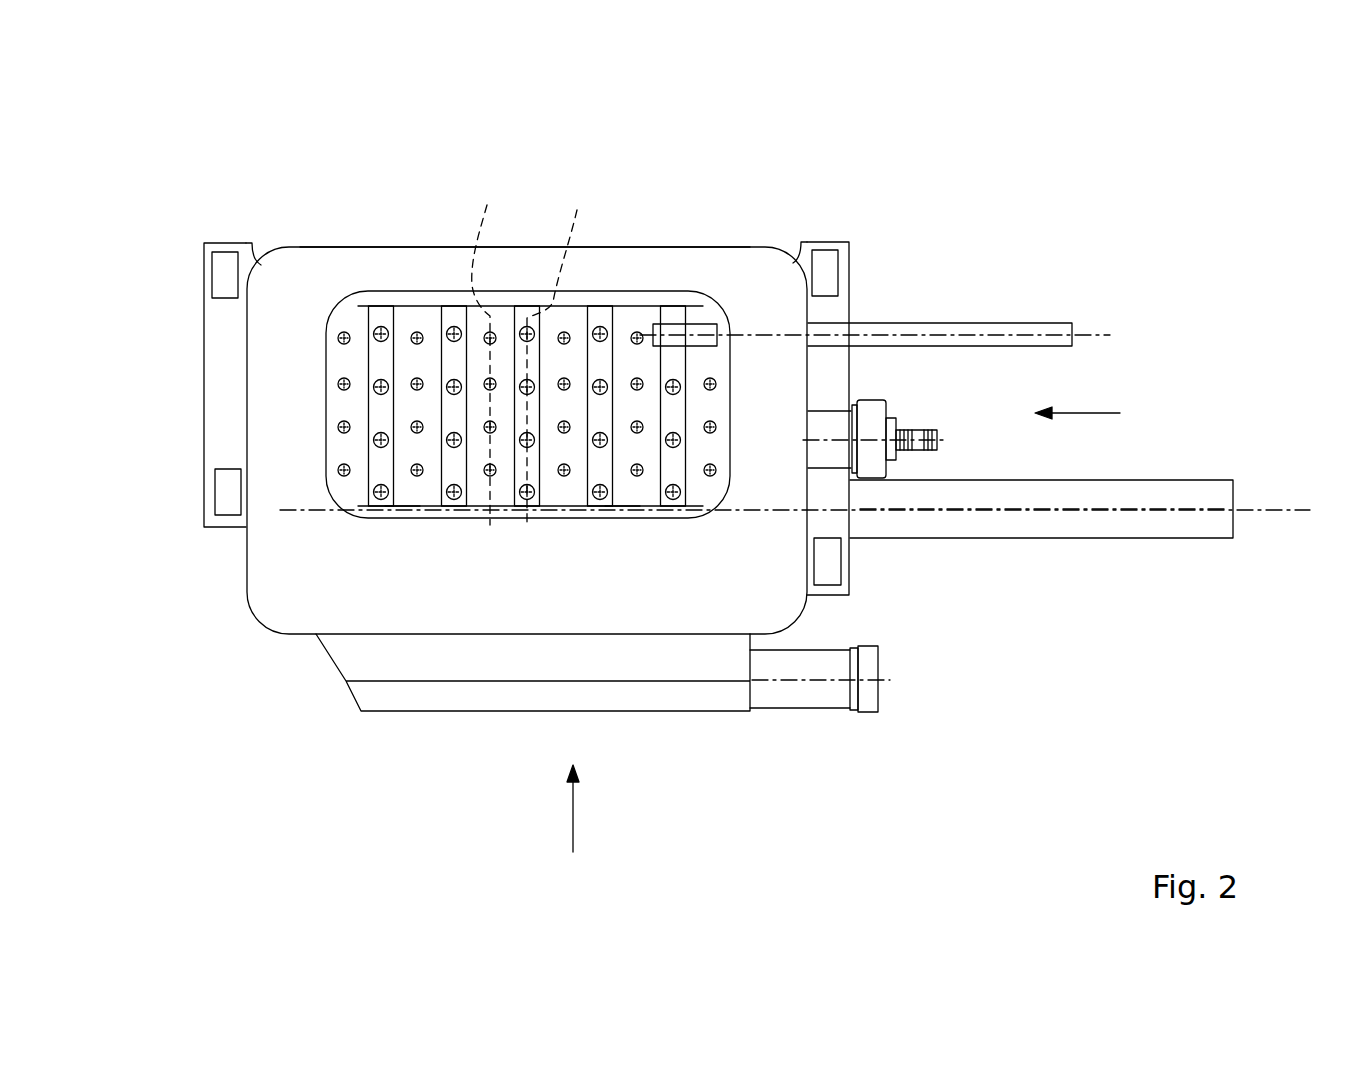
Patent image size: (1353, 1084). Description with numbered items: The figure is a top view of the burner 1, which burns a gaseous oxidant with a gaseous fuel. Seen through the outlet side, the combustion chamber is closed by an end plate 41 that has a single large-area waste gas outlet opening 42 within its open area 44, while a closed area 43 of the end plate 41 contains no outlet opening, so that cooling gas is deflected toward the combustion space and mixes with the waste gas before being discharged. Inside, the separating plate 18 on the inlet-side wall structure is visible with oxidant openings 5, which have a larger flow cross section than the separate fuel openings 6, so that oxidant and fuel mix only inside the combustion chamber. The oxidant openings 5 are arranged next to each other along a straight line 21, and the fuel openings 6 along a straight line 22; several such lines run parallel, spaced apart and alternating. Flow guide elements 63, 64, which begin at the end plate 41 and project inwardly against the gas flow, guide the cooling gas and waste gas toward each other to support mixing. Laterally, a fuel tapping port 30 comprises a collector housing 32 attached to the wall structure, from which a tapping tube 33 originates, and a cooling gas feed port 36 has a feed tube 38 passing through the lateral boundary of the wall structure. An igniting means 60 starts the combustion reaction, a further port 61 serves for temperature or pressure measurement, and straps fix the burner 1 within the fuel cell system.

The burner 1 is at (972, 250).
The oxidant openings 5 is at (607, 335).
The fuel openings 6 is at (342, 333).
The separating plate 18 is at (378, 326).
The line 21 is at (566, 350).
The line 22 is at (487, 346).
The fuel tapping port 30 is at (795, 712).
The collector housing 32 is at (700, 692).
The tapping tube 33 is at (822, 693).
The cooling gas feed port 36 is at (1175, 480).
The feed tube 38 is at (1155, 522).
The end plate 41 is at (523, 245).
The waste gas outlet opening 42 is at (706, 346).
The closed area 43 is at (465, 573).
The open area 44 is at (292, 396).
The igniting means 60 is at (875, 412).
The port 61 is at (1053, 330).
The first flow guide element 63 is at (532, 512).
The second flow guide element 64 is at (440, 305).